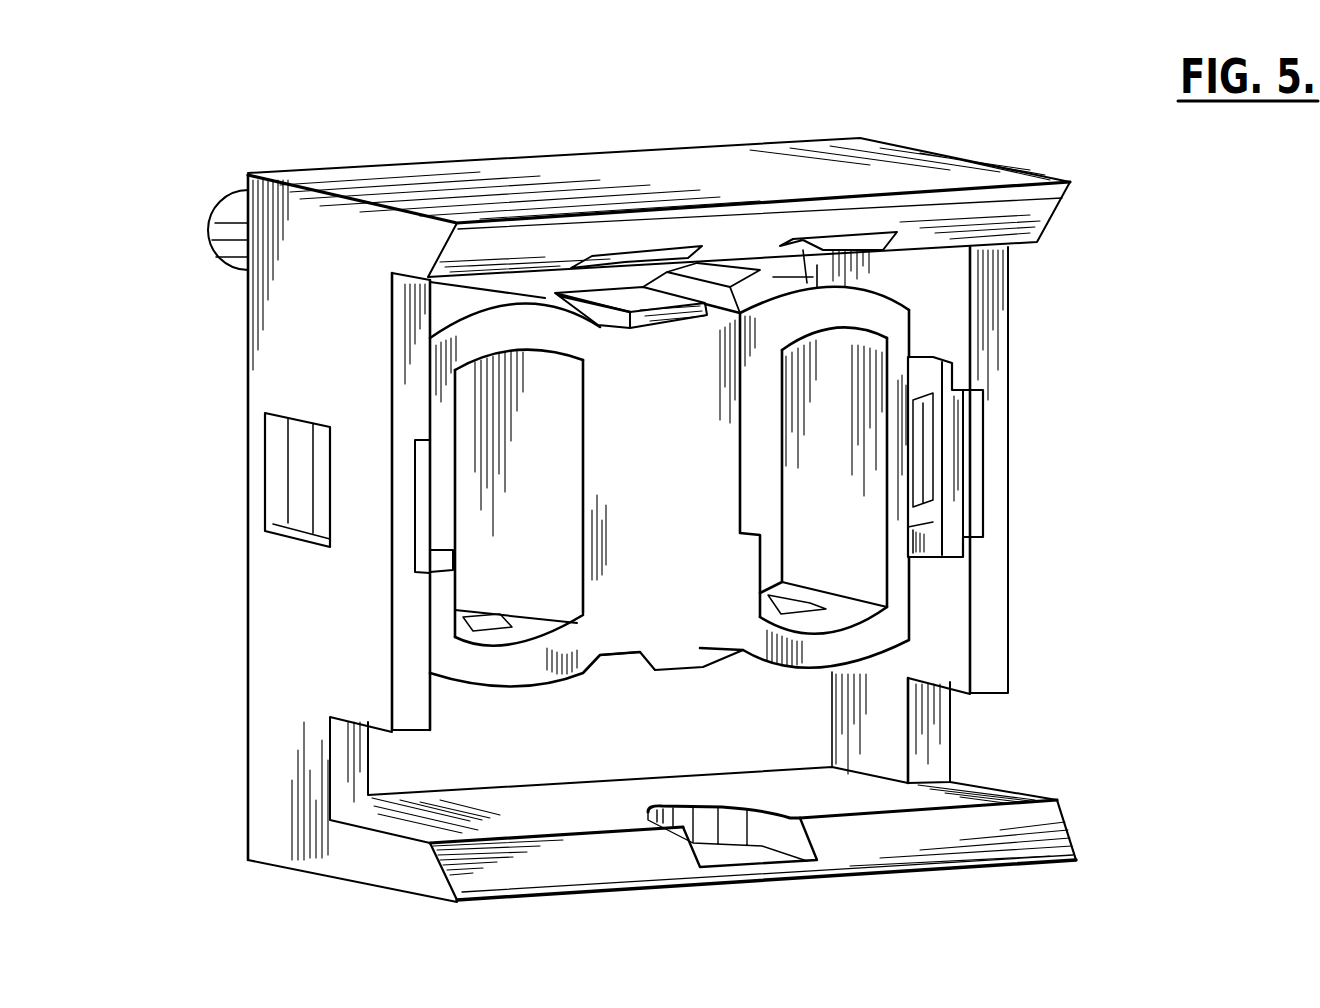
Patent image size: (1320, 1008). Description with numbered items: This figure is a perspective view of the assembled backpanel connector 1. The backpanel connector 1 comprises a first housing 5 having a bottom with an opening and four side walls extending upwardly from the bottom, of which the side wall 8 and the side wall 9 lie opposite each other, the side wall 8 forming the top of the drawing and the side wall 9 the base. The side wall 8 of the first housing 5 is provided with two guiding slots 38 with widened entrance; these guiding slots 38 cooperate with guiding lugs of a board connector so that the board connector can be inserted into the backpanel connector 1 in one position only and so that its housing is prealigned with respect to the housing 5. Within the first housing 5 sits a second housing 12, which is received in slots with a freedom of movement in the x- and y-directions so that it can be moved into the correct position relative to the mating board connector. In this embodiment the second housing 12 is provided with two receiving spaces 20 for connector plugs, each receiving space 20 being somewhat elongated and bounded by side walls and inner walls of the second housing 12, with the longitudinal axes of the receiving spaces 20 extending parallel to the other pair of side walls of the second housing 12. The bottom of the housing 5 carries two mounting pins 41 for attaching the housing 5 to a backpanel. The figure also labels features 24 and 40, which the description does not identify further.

The backpanel connector 1 is at (703, 134).
The first housing 5 is at (940, 144).
The side wall 8 is at (493, 240).
The side wall 9 is at (387, 873).
The second housing 12 is at (890, 322).
The receiving space 20 is at (446, 516).
The side window 24 is at (303, 468).
The guiding slot 38 is at (612, 258).
The tongues 40 is at (645, 289).
The mounting pin 41 is at (227, 217).